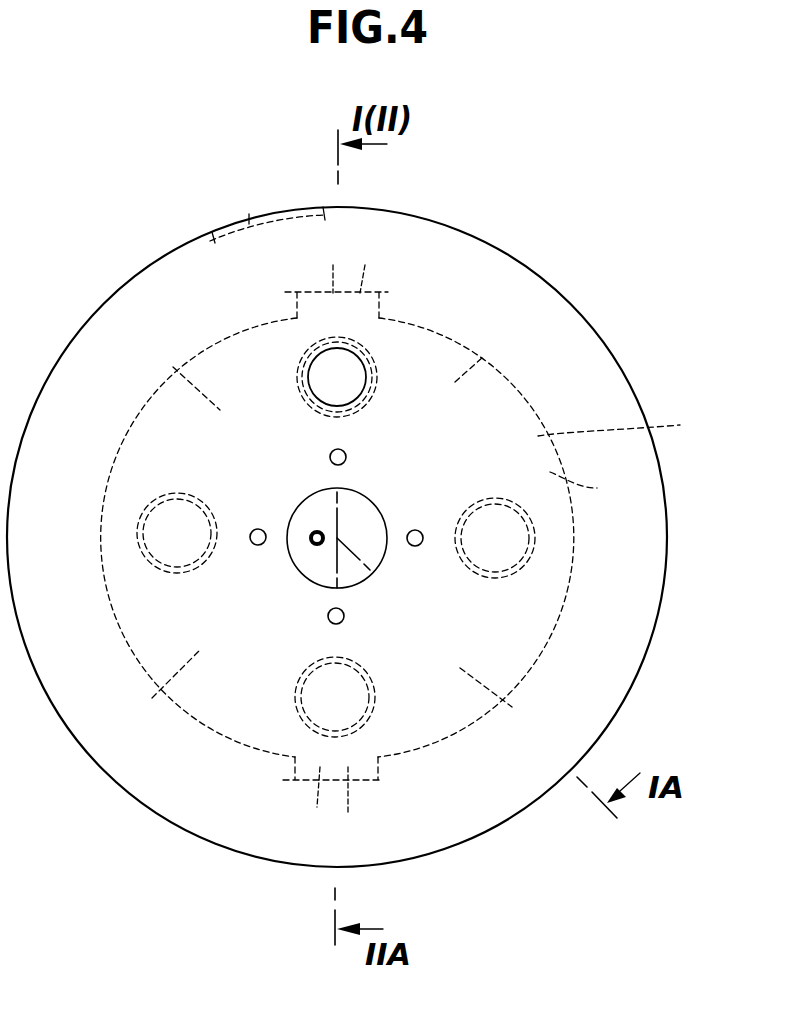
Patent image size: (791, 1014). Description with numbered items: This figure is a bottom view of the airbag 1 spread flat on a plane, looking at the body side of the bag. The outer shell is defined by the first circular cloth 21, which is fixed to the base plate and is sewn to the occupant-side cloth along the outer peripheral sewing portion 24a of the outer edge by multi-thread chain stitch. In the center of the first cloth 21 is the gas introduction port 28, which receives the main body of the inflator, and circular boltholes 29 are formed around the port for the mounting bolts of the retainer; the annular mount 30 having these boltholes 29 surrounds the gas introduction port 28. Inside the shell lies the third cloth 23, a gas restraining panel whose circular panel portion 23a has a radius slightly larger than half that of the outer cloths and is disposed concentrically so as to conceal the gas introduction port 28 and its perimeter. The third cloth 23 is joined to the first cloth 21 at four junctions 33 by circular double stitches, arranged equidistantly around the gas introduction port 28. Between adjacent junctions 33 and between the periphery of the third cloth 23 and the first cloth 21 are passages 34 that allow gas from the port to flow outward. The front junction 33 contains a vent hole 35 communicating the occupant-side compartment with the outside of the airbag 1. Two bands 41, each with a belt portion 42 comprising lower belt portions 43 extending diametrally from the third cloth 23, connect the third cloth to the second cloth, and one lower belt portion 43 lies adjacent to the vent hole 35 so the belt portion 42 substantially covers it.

The airbag 1 is at (588, 289).
The first circular cloth 21 is at (578, 373).
The third circular cloth 23 is at (626, 425).
The circular panel portion 23a is at (597, 487).
The outer peripheral sewing portion 24a is at (248, 218).
The gas introduction port 28 is at (297, 570).
The boltholes 29 is at (330, 456).
The annular mount 30 is at (382, 503).
The junctions 33 is at (180, 493).
The passage 34 is at (335, 532).
The vent hole 35 is at (340, 367).
The band 41 is at (288, 295).
The belt portion 42 is at (343, 542).
The lower belt portions 43 is at (340, 542).